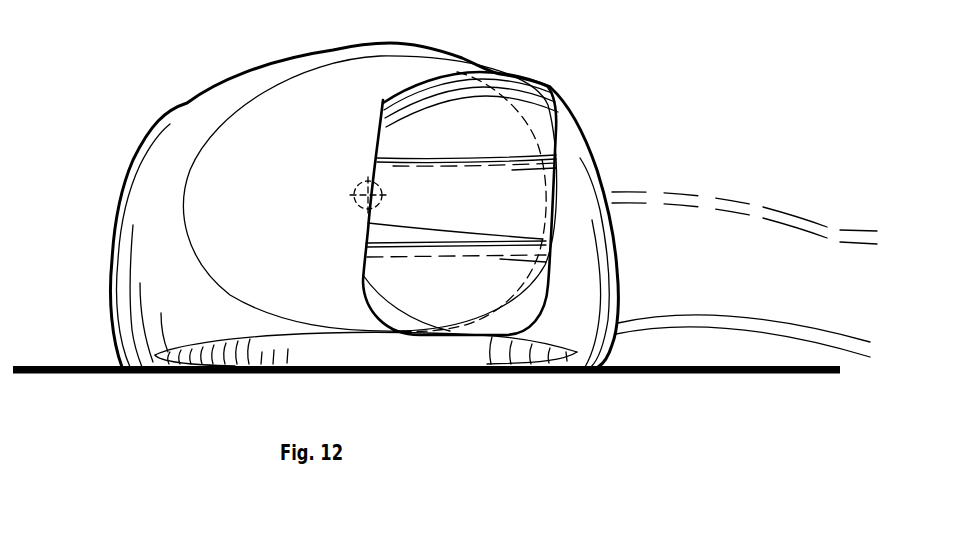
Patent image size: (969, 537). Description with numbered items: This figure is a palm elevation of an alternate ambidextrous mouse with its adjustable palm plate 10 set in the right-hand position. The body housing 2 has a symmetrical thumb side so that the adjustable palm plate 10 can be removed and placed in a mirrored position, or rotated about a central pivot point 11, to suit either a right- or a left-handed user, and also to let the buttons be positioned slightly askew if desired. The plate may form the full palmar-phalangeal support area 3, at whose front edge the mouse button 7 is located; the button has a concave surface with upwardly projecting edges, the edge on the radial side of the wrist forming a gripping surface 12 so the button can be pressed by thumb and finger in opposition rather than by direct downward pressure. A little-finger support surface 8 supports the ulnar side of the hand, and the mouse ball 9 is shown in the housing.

The body housing 2 is at (155, 268).
The palmar-phalangeal support area 3 is at (193, 106).
The mouse button 7 is at (520, 138).
The little-finger support surface 8 is at (352, 350).
The mouse ball 9 is at (188, 183).
The adjustable palm plate 10 is at (351, 191).
The pivot point 11 is at (800, 323).
The gripping surface 12 is at (798, 222).